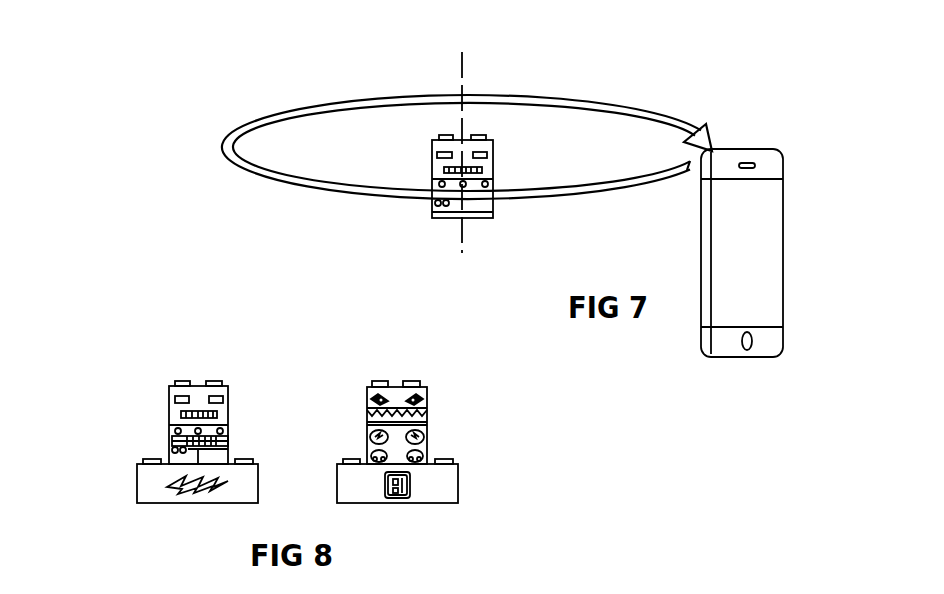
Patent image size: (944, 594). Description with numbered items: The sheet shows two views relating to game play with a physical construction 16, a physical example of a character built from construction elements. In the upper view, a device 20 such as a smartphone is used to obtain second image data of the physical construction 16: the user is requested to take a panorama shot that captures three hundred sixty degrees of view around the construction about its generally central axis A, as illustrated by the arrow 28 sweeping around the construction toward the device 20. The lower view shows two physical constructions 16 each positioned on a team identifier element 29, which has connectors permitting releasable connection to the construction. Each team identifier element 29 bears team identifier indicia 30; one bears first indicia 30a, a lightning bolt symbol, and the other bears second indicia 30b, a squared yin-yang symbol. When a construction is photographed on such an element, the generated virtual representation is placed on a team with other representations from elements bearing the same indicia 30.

In FIG. 7, the central axis A is at (462, 72).
In FIG. 7, the physical construction 16 is at (493, 153).
In FIG. 8, the physical construction 16 is at (230, 406).
In FIG. 7, the device 20 is at (773, 148).
In FIG. 7, the arrow 28 is at (602, 102).
In FIG. 8, the team identifier element 29 is at (257, 485).
In FIG. 8, the team identifier indicia 30 is at (289, 481).
In FIG. 8, the first indicia 30a is at (167, 486).
In FIG. 8, the second indicia 30b is at (410, 488).